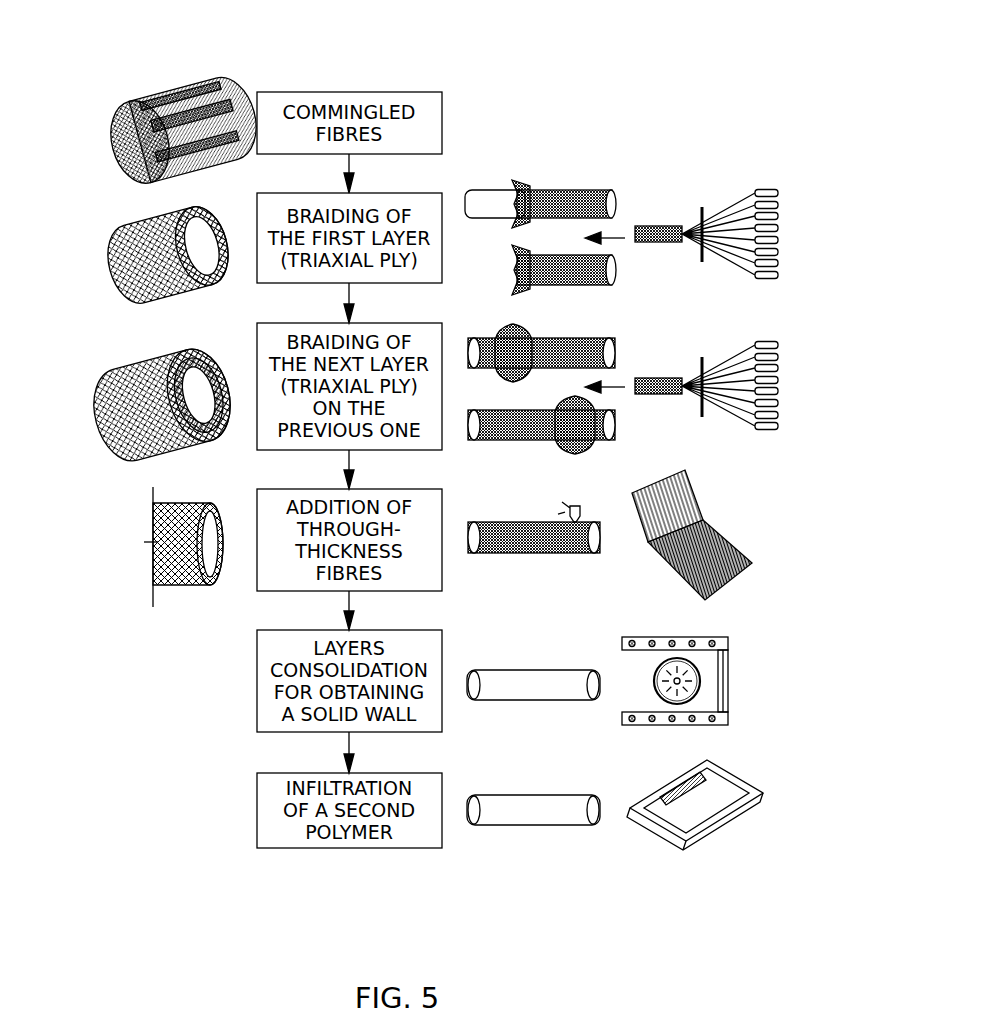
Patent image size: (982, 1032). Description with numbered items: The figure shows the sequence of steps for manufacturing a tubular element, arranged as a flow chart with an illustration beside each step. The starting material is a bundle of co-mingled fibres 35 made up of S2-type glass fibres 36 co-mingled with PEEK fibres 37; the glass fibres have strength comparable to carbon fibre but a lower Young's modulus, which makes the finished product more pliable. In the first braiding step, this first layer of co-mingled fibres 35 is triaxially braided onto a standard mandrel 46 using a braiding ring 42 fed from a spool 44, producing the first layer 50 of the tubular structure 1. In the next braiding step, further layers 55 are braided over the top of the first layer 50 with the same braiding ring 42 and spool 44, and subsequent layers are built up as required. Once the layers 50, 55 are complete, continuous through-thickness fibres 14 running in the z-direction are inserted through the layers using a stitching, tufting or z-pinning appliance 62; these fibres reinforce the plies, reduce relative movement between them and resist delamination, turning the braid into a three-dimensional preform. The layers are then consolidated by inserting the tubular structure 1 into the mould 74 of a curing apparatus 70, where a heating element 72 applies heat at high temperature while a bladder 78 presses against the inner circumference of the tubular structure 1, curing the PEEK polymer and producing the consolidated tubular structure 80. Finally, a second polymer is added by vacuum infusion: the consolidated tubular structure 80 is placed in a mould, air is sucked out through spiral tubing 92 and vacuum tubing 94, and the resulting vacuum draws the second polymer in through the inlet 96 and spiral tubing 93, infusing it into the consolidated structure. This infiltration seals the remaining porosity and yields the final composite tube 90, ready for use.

The co-mingled fibres 35 is at (354, 133).
The S2-type glass fibres 36 is at (230, 90).
The PEEK fibres 37 is at (218, 87).
The mandrel 46 is at (490, 200).
The first layer 50 is at (125, 243).
The further layers 55 is at (108, 395).
The braiding ring 42 is at (702, 210).
The spool 44 is at (772, 279).
The stitching/tufting/z-pinning appliance 62 is at (576, 503).
The through-thickness fibres 14 is at (690, 490).
The curing apparatus 70 is at (685, 646).
The heating element 72 is at (728, 640).
The mould 74 is at (723, 667).
The tubular structure 1 is at (703, 683).
The bladder 78 is at (700, 694).
The consolidated tubular structure 80 is at (525, 705).
The composite tube 90 is at (518, 833).
The spiral tubing 92 is at (694, 803).
The spiral tubing 93 is at (641, 808).
The vacuum tubing 94 is at (744, 800).
The inlet 96 is at (697, 822).